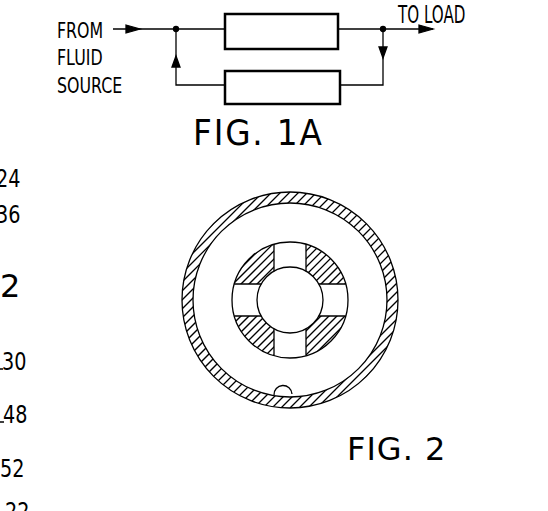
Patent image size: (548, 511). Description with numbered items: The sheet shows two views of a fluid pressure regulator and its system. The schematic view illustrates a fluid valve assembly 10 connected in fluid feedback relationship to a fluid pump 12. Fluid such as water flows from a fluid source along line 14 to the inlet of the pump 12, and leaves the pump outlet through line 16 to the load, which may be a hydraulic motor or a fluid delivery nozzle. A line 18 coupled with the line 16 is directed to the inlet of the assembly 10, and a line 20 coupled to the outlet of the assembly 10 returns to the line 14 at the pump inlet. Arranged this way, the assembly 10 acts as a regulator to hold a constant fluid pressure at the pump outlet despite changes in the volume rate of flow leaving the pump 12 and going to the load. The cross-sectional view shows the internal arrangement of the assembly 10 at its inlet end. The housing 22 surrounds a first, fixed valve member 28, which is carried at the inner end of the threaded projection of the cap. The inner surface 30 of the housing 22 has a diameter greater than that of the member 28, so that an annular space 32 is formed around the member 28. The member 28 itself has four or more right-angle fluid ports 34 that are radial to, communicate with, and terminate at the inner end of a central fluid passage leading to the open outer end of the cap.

In FIG. 1A, the fluid valve assembly 10 is at (320, 104).
In FIG. 1A, the fluid pump 12 is at (338, 39).
In FIG. 1A, the line 14 is at (163, 29).
In FIG. 1A, the line 16 is at (410, 31).
In FIG. 1A, the line 18 is at (387, 82).
In FIG. 1A, the line 20 is at (175, 83).
In FIG. 2, the housing 22 is at (395, 330).
In FIG. 2, the first, fixed valve member 28 is at (289, 300).
In FIG. 2, the inner surface 30 is at (280, 393).
In FIG. 2, the annular space 32 is at (347, 358).
In FIG. 2, the right-angle fluid ports 34 is at (287, 246).